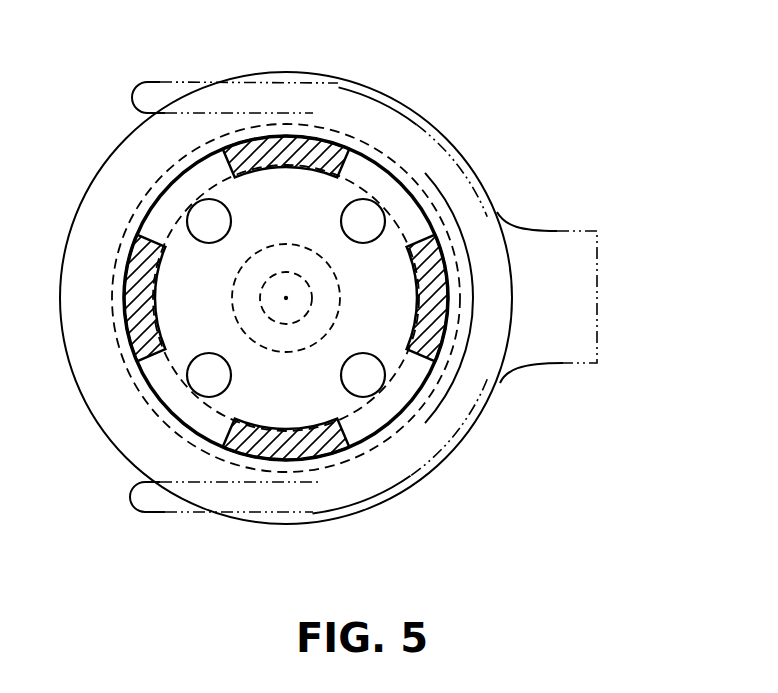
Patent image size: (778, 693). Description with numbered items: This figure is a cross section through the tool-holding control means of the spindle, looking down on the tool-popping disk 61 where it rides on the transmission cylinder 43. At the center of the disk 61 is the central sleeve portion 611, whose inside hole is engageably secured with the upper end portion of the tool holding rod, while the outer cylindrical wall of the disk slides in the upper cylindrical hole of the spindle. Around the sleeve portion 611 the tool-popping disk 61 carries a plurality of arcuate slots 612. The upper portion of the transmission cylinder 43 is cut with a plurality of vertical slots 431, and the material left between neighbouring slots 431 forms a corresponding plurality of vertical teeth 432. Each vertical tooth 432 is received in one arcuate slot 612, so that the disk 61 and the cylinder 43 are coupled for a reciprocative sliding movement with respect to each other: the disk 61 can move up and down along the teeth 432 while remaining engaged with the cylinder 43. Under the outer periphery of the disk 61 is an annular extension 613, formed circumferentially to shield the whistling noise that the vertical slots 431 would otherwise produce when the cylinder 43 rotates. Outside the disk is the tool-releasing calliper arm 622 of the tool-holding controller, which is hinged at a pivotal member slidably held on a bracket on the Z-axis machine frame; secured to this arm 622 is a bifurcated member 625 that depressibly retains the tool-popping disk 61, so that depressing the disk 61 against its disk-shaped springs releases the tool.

The transmission cylinder 43 is at (420, 213).
The vertical slots 431 is at (208, 158).
The vertical teeth 432 is at (272, 140).
The tool-popping disk 61 is at (387, 96).
The central sleeve portion 611 is at (340, 305).
The arcuate slots 612 is at (322, 145).
The annular extension 613 is at (150, 407).
The tool-releasing calliper arm 622 is at (560, 228).
The bifurcated member 625 is at (135, 82).